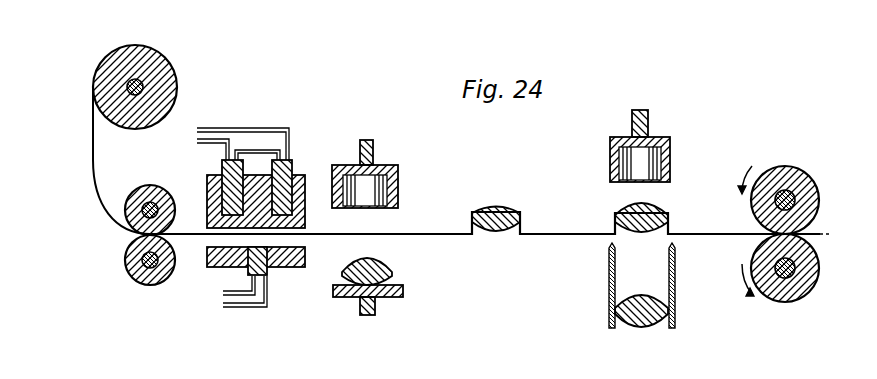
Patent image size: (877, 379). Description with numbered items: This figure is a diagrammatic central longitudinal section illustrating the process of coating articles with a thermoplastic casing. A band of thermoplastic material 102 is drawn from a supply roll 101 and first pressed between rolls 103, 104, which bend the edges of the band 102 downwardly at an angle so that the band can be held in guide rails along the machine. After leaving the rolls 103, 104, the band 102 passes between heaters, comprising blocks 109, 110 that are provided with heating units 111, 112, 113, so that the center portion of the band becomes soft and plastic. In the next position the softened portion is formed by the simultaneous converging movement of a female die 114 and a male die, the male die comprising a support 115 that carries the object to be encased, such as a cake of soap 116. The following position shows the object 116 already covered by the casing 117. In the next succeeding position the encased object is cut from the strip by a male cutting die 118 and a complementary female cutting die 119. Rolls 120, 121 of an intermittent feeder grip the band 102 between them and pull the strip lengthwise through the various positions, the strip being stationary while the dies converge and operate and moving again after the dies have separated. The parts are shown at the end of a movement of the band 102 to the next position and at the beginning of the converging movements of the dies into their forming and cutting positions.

The supply roll 101 is at (172, 67).
The band of thermoplastic material 102 is at (102, 178).
The roll 103 is at (124, 228).
The roll 104 is at (133, 275).
The heater block 109 is at (215, 268).
The heater block 110 is at (303, 175).
The heating unit 111 is at (233, 159).
The heating unit 112 is at (290, 159).
The heating unit 113 is at (278, 268).
The female die 114 is at (374, 150).
The support 115 is at (390, 290).
The cake of soap 116 is at (495, 232).
The casing 117 is at (513, 207).
The male cutting die 118 is at (645, 135).
The female cutting die 119 is at (608, 272).
The feeding roll 120 is at (810, 122).
The feeding roll 121 is at (800, 290).